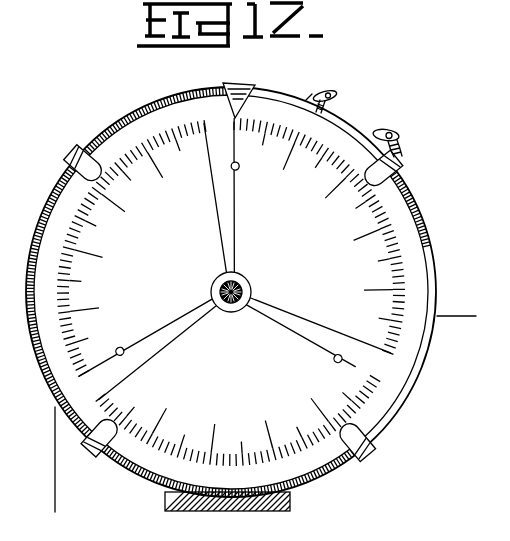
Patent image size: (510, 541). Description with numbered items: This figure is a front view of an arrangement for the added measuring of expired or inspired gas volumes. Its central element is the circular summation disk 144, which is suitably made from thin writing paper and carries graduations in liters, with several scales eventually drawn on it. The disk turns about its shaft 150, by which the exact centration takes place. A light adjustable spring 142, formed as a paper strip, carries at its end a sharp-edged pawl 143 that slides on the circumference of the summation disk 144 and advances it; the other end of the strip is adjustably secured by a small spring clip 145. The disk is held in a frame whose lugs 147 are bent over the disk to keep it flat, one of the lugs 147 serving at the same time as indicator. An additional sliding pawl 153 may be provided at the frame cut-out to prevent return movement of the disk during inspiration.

The adjustable spring 142 is at (308, 100).
The pawl 143 is at (294, 99).
The summation disk 144 is at (231, 292).
The spring clip 145 is at (336, 93).
The lugs 147 is at (70, 157).
The shaft 150 is at (251, 293).
The sliding pawl 153 is at (360, 134).